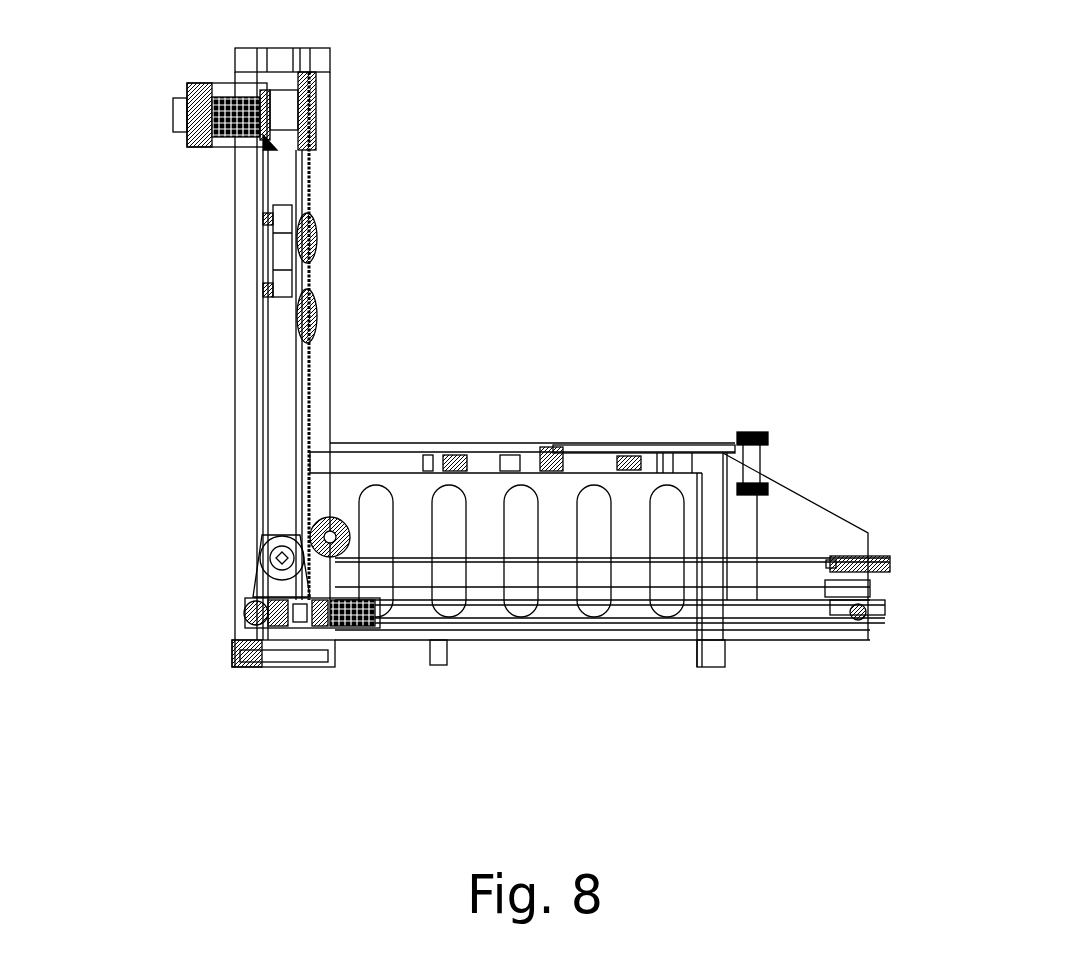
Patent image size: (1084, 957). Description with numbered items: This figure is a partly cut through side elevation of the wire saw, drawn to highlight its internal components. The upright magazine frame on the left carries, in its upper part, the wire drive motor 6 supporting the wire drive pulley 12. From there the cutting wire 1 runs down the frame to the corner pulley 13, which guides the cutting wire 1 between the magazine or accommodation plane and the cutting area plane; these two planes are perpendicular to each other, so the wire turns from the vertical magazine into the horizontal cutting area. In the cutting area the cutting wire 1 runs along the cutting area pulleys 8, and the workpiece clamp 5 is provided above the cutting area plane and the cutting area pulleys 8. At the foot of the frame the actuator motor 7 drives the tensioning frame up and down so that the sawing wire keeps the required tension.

The cutting wire 1 is at (780, 557).
The workpiece clamp 5 is at (620, 448).
The wire drive motor 6 is at (197, 118).
The actuator motor 7 is at (247, 615).
The cutting area pulley 8 is at (882, 557).
The wire drive pulley 12 is at (315, 97).
The corner pulley 13 is at (317, 548).